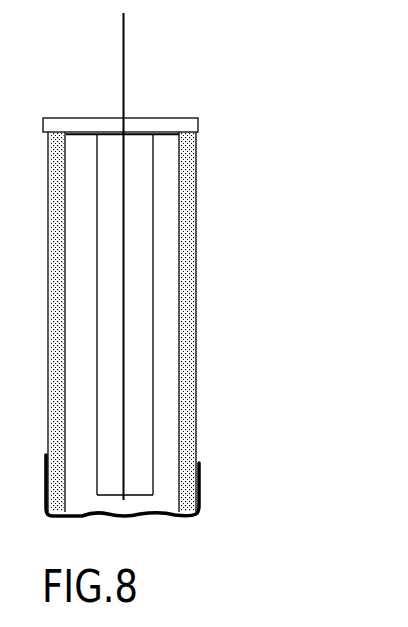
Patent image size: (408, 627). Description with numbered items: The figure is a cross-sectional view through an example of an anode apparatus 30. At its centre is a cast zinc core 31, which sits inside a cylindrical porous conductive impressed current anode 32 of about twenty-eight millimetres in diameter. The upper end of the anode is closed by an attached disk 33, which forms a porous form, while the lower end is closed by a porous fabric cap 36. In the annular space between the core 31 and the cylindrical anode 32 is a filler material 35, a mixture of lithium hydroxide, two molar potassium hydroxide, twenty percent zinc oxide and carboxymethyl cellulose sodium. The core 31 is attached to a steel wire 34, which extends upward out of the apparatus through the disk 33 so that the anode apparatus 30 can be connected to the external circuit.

The anode apparatus 30 is at (183, 265).
The cast zinc core 31 is at (160, 289).
The porous conductive impressed current anode 32 is at (192, 176).
The attached disk 33 is at (204, 121).
The steel wire 34 is at (132, 43).
The filler material 35 is at (178, 427).
The porous fabric cap 36 is at (211, 504).